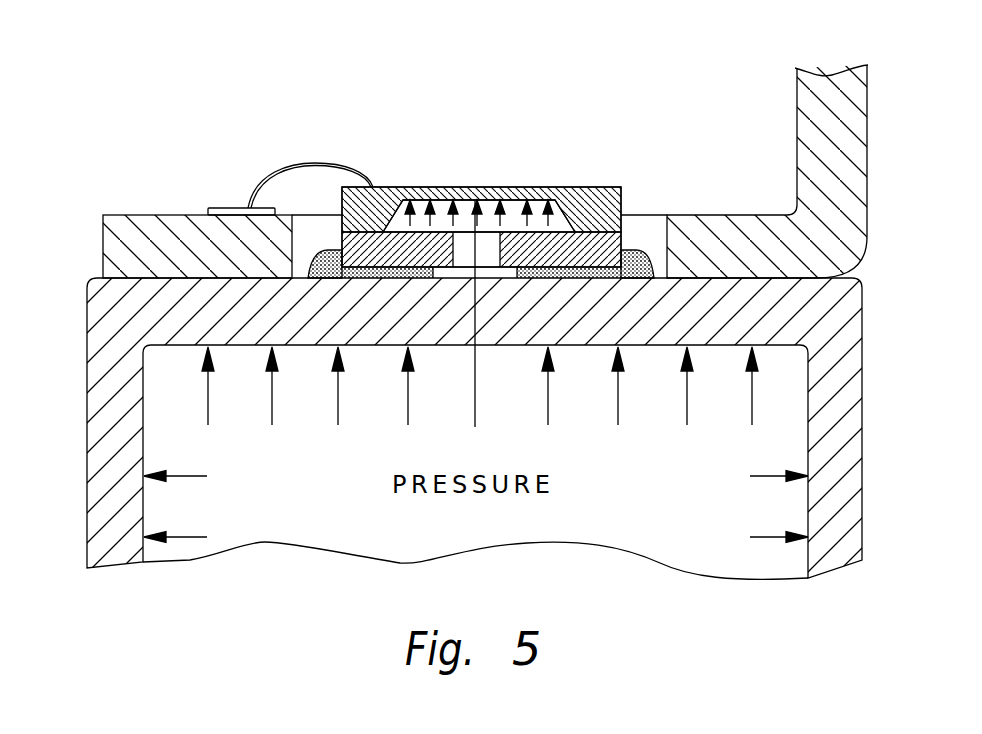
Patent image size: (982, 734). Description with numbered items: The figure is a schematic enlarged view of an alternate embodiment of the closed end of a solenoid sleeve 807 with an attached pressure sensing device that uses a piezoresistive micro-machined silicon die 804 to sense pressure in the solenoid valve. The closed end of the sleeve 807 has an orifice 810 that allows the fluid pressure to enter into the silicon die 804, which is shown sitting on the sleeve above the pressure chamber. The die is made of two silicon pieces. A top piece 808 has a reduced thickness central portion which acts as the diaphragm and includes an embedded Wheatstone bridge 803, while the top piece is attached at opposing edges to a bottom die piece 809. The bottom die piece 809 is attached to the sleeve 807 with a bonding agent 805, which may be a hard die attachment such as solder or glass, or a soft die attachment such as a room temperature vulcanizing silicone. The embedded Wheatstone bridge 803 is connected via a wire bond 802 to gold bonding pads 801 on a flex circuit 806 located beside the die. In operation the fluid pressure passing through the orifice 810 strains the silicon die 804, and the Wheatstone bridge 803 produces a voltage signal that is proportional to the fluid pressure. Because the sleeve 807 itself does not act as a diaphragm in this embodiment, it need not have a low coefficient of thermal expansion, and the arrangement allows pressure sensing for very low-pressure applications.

The gold bonding pads 801 is at (222, 207).
The wire bond 802 is at (343, 140).
The Wheatstone bridge 803 is at (488, 187).
The silicon die 804 is at (558, 185).
The bonding agent 805 is at (648, 273).
The flex circuit 806 is at (800, 132).
The sleeve 807 is at (92, 280).
The top piece 808 is at (608, 187).
The bottom die piece 809 is at (630, 252).
The orifice 810 is at (478, 345).